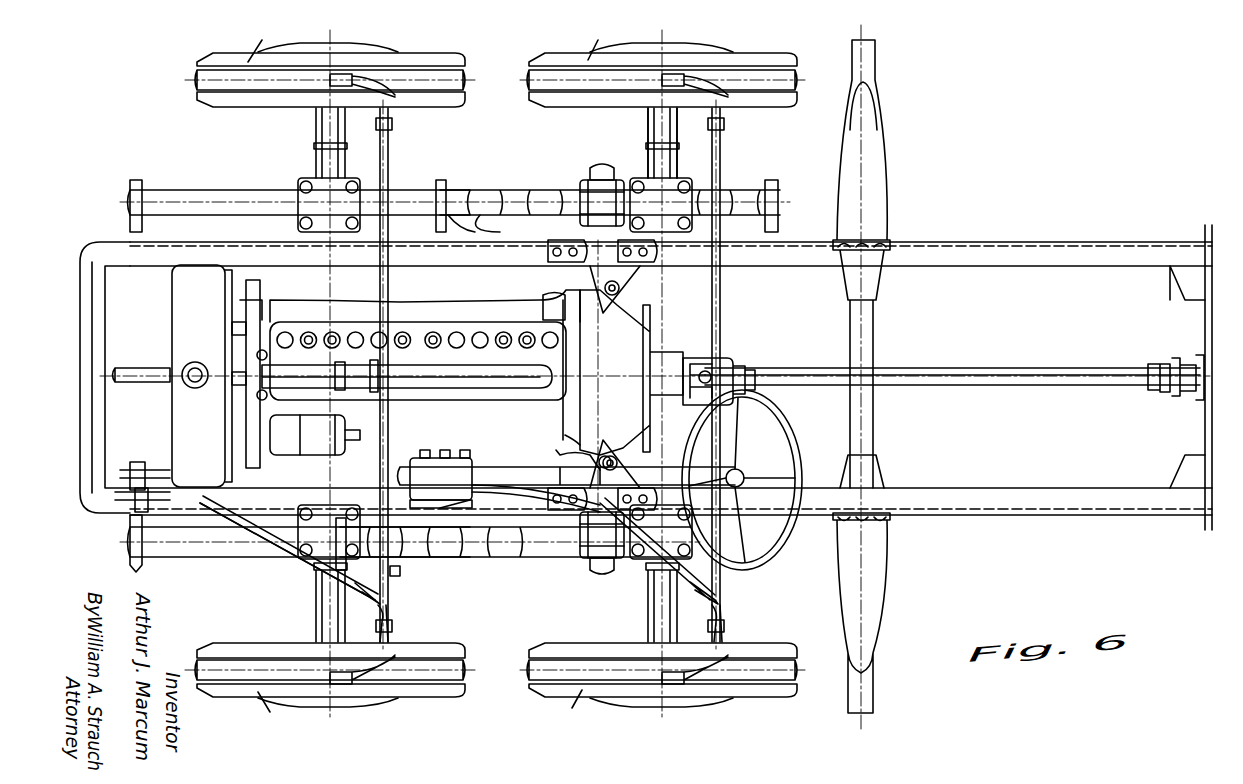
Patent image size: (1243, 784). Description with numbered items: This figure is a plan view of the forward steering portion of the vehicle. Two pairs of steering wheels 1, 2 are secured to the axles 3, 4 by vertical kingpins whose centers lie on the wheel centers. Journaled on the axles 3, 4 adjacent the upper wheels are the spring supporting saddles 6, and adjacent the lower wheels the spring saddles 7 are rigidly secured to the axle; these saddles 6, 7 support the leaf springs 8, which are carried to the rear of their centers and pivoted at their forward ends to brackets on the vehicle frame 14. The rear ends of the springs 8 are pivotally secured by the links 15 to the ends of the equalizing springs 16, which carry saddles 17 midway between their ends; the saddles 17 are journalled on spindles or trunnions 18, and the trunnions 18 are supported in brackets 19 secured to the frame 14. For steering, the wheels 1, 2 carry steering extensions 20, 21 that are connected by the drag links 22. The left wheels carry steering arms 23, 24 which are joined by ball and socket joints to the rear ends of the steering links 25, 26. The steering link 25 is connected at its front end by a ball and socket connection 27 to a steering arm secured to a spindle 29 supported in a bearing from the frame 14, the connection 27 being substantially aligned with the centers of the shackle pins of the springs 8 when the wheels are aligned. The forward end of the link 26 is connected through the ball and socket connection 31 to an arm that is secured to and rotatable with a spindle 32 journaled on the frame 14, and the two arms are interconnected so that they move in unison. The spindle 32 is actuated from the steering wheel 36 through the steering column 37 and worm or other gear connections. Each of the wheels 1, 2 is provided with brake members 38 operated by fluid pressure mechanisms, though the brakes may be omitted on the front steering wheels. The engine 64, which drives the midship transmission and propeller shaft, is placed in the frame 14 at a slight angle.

The steering wheels 1 is at (440, 62).
The steering wheels 2 is at (770, 62).
The axle 3 is at (312, 165).
The axle 4 is at (648, 160).
The spring supporting saddles 6 is at (298, 195).
The spring saddles 7 is at (300, 570).
The leaf springs 8 is at (192, 192).
The vehicle frame 14 is at (975, 244).
The links 15 is at (492, 560).
The equalizing springs 16 is at (475, 190).
The saddles 17 is at (580, 200).
The spindles or trunnions 18 is at (600, 166).
The brackets 19 is at (660, 298).
The steering extension 20 is at (380, 62).
The steering extension 21 is at (705, 62).
The drag links 22 is at (392, 168).
The steering arm 23 is at (345, 620).
The steering arm 24 is at (700, 620).
The steering link 25 is at (262, 578).
The steering link 26 is at (612, 570).
The ball and socket connection 27 is at (125, 505).
The spindle 29 is at (142, 470).
The ball and socket connection 31 is at (445, 505).
The spindle 32 is at (490, 450).
The steering wheel 36 is at (800, 465).
The steering column 37 is at (605, 455).
The brake members 38 is at (430, 376).
The engine 64 is at (490, 318).